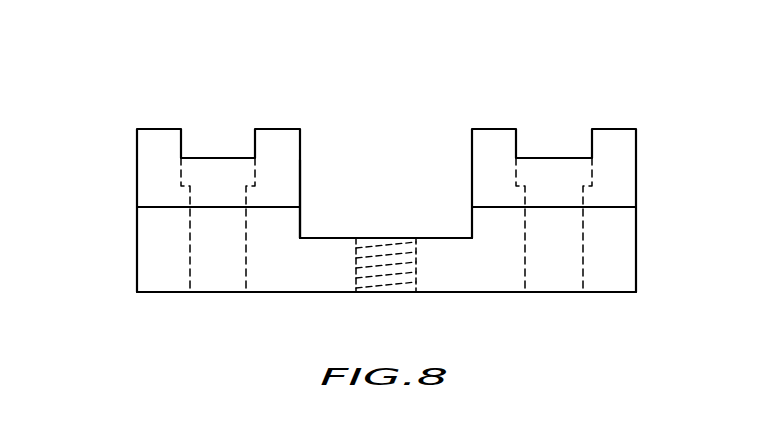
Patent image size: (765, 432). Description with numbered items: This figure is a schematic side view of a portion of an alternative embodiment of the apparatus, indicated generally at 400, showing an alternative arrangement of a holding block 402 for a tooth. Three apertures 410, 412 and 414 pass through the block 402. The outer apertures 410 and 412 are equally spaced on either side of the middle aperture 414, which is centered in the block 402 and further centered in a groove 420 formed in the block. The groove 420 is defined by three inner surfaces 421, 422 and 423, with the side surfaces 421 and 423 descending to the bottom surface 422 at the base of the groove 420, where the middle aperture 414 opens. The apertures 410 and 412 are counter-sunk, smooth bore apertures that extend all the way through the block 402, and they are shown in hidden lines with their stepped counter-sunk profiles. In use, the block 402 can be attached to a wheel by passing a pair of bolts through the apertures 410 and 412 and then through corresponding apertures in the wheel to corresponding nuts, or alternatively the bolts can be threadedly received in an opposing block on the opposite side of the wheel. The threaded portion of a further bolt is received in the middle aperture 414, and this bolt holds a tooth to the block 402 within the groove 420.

The mold assembly 400 is at (320, 89).
The holding block 402 is at (160, 128).
The inner surface 423 is at (470, 152).
The aperture 410 is at (190, 265).
The aperture 412 is at (525, 265).
The middle aperture 414 is at (412, 272).
The groove 420 is at (435, 183).
The inner surface 421 is at (302, 160).
The inner surface 422 is at (328, 238).